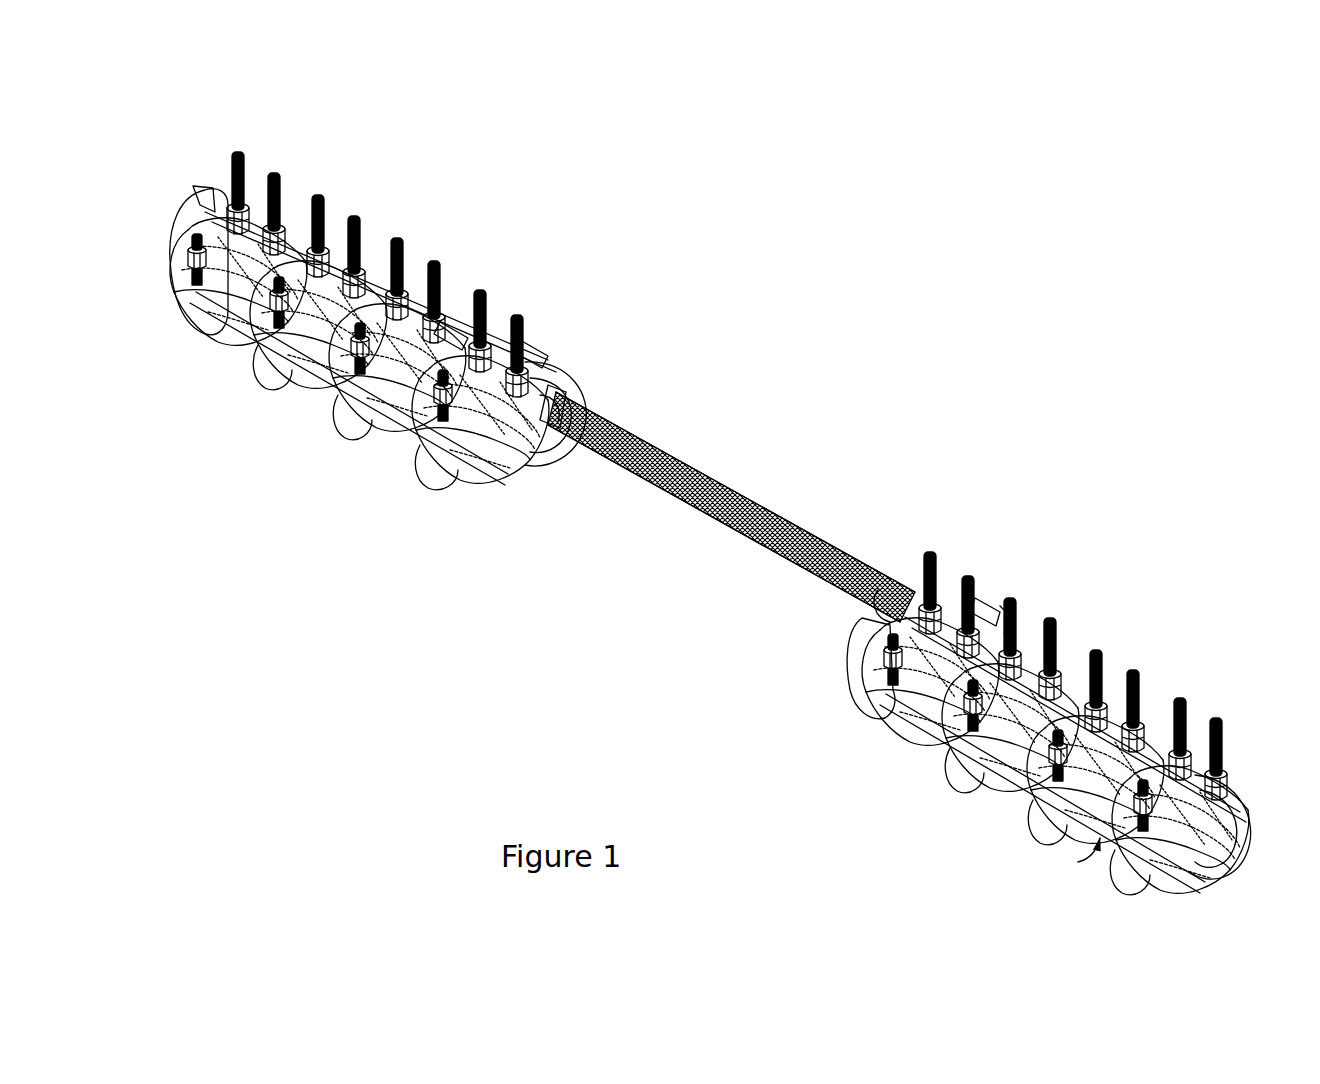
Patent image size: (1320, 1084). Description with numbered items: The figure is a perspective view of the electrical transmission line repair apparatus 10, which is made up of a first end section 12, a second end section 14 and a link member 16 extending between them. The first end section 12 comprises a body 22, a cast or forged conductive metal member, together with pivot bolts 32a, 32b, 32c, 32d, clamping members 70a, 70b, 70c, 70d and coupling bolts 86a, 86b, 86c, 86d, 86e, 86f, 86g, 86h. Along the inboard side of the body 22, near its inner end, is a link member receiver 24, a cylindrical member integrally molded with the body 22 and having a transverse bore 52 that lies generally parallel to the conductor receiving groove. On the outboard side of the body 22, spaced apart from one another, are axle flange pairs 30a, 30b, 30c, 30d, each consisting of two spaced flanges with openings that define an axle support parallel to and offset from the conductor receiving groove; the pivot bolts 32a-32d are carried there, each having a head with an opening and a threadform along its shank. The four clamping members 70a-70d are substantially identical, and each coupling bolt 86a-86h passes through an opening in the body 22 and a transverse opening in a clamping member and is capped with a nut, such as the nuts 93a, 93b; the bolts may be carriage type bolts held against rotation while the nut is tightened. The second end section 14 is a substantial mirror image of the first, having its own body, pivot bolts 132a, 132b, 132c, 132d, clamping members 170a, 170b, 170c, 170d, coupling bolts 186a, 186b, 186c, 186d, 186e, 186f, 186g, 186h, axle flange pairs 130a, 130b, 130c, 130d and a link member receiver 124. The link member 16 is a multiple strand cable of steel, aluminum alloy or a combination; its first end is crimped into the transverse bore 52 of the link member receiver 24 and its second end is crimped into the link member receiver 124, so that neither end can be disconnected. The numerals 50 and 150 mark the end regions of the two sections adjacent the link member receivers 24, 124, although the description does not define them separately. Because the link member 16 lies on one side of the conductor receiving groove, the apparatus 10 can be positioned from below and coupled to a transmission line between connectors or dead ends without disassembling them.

The electrical transmission line repair apparatus 10 is at (736, 323).
The first end section 12 is at (165, 438).
The second end section 14 is at (970, 861).
The link member 16 is at (598, 457).
The body 22 is at (245, 332).
The link member receiver 24 is at (541, 357).
The axle flange pair 30a is at (455, 482).
The axle flange pair 30b is at (370, 435).
The axle flange pair 30c is at (288, 380).
The axle flange pair 30d is at (200, 332).
The pivot bolt 32a is at (430, 472).
The pivot bolt 32b is at (350, 424).
The pivot bolt 32c is at (268, 372).
The pivot bolt 32d is at (186, 323).
The end clamp 50 is at (568, 372).
The transverse bore 52 is at (579, 400).
The clamping member 70a is at (496, 348).
The clamping member 70b is at (414, 300).
The clamping member 70c is at (333, 258).
The clamping member 70d is at (251, 210).
The coupling bolt 86a is at (515, 306).
The coupling bolt 86b is at (484, 282).
The coupling bolt 86c is at (441, 257).
The coupling bolt 86d is at (411, 235).
The coupling bolt 86e is at (359, 208).
The coupling bolt 86f is at (318, 191).
The coupling bolt 86g is at (281, 160).
The coupling bolt 86h is at (233, 148).
The nut 93a is at (529, 346).
The spacer plate 93b is at (461, 327).
The link member receiver 124 is at (985, 613).
The axle flange pair 130a is at (895, 741).
The axle flange pair 130b is at (972, 787).
The axle flange pair 130c is at (1055, 831).
The axle flange pair 130d is at (1147, 881).
The pivot bolt 132a is at (882, 733).
The pivot bolt 132b is at (960, 775).
The pivot bolt 132c is at (1043, 814).
The pivot bolt 132d is at (1123, 874).
The end clamp 150 is at (999, 615).
The clamping member 170a is at (946, 621).
The clamping member 170b is at (1034, 663).
The clamping member 170c is at (1114, 707).
The clamping member 170d is at (1193, 751).
The coupling bolt 186a is at (915, 578).
The coupling bolt 186b is at (968, 564).
The coupling bolt 186c is at (1021, 591).
The coupling bolt 186d is at (1054, 613).
The coupling bolt 186e is at (1099, 634).
The coupling bolt 186f is at (1134, 654).
The coupling bolt 186g is at (1181, 686).
The coupling bolt 186h is at (1219, 707).